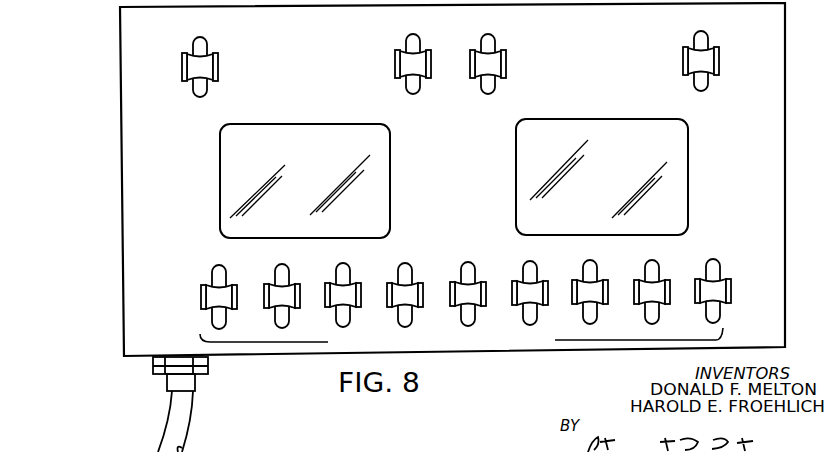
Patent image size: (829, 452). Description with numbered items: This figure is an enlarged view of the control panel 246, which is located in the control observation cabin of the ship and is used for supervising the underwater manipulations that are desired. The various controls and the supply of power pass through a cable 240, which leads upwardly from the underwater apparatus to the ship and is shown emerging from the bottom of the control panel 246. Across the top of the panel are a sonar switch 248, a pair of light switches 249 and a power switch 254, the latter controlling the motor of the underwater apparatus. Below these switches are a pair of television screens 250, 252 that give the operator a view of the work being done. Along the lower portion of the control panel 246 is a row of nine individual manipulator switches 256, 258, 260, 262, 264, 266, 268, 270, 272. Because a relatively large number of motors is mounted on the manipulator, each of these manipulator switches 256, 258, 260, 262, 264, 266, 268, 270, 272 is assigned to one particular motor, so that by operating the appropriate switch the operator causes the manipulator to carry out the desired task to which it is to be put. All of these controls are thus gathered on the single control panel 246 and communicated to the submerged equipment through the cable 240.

The cable 240 is at (175, 437).
The control panel 246 is at (122, 248).
The sonar switch 248 is at (220, 67).
The light switches 249 is at (469, 66).
The television screen 250 is at (232, 145).
The television screen 252 is at (540, 170).
The power switch 254 is at (683, 62).
The manipulator switch 256 is at (236, 309).
The manipulator switch 258 is at (297, 284).
The manipulator switch 260 is at (357, 307).
The manipulator switch 262 is at (420, 283).
The manipulator switch 264 is at (480, 306).
The manipulator switch 266 is at (544, 281).
The manipulator switch 268 is at (603, 304).
The manipulator switch 270 is at (666, 280).
The manipulator switch 272 is at (726, 303).